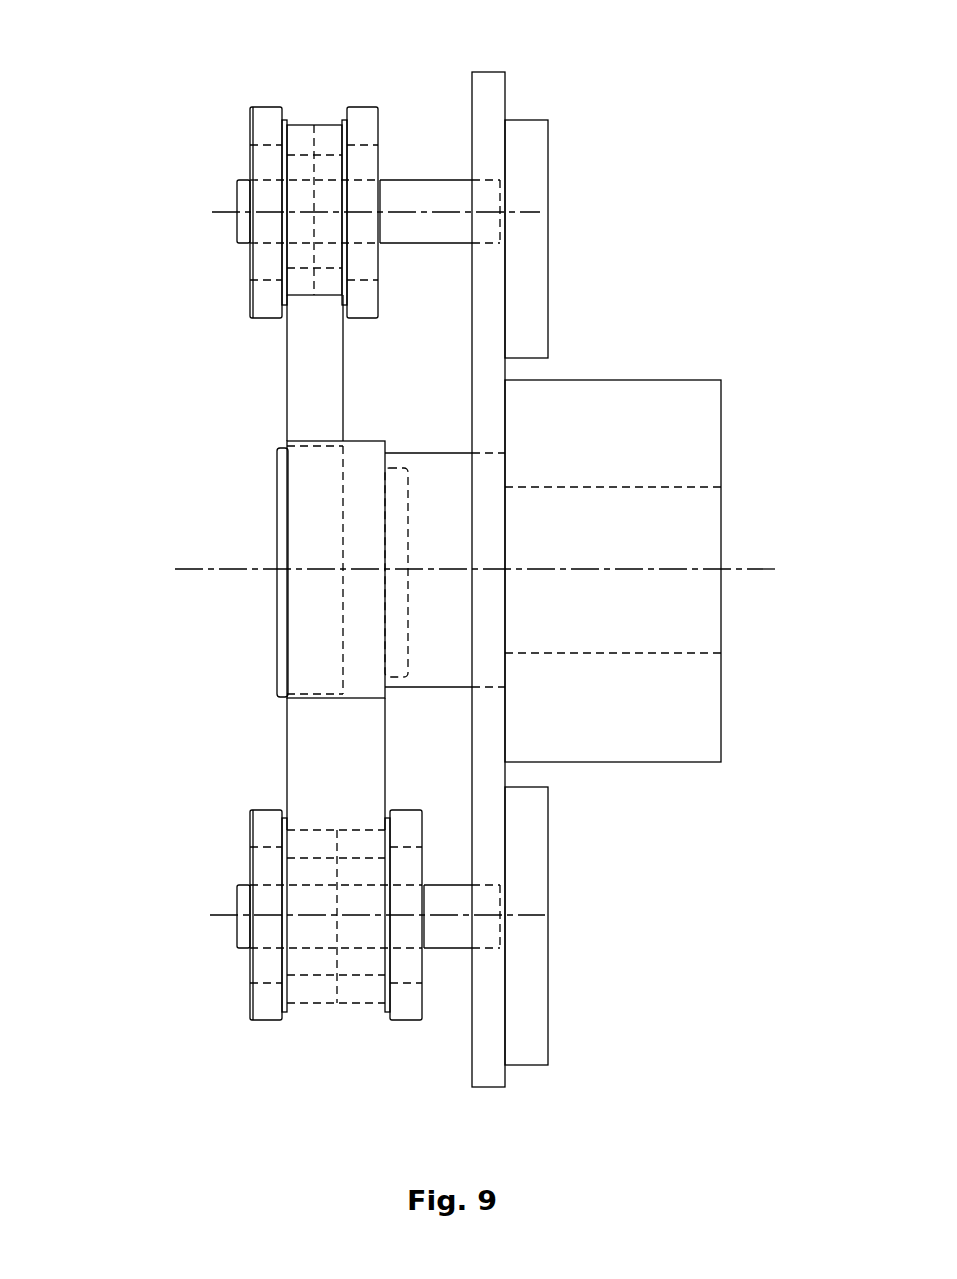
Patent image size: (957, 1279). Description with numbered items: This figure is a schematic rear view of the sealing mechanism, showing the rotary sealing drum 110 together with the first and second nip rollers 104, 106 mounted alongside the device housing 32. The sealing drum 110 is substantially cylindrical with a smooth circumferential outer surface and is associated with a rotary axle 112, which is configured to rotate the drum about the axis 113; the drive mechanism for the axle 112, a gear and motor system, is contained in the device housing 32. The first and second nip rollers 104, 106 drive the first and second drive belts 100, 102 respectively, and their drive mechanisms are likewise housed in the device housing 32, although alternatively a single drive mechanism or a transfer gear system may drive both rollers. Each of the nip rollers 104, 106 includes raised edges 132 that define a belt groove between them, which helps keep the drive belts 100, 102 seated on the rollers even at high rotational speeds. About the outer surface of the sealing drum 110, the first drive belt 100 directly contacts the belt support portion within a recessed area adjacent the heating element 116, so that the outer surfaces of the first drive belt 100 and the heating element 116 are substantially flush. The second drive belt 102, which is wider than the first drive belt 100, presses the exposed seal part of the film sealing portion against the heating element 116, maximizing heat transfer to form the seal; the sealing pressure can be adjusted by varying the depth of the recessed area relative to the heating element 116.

The device housing 32 is at (530, 140).
The first drive belt 100 is at (287, 368).
The second drive belt 102 is at (287, 762).
The first nip roller 104 is at (234, 120).
The second nip roller 106 is at (234, 833).
The sealing drum 110 is at (278, 527).
The rotary axle 112 is at (705, 523).
The axis 113 is at (276, 438).
The heating element 116 is at (365, 455).
The raised edges 132 is at (264, 108).